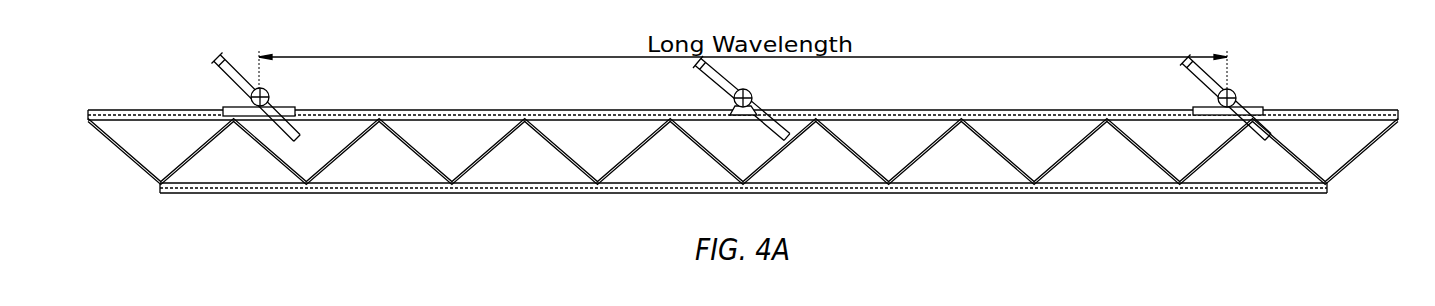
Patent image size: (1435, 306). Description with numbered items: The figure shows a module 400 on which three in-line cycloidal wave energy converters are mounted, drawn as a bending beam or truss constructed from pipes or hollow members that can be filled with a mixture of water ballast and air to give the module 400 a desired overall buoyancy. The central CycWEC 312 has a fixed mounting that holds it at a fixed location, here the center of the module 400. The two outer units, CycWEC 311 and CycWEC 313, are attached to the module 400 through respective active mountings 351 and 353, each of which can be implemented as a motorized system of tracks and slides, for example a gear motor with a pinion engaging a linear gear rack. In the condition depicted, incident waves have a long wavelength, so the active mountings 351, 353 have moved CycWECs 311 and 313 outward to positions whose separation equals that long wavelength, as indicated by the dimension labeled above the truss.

The module 400 is at (158, 108).
The active mounting 351 is at (232, 108).
The active mounting 353 is at (1205, 107).
The CycWEC 311 is at (268, 97).
The central CycWEC 312 is at (752, 96).
The CycWEC 313 is at (1238, 97).